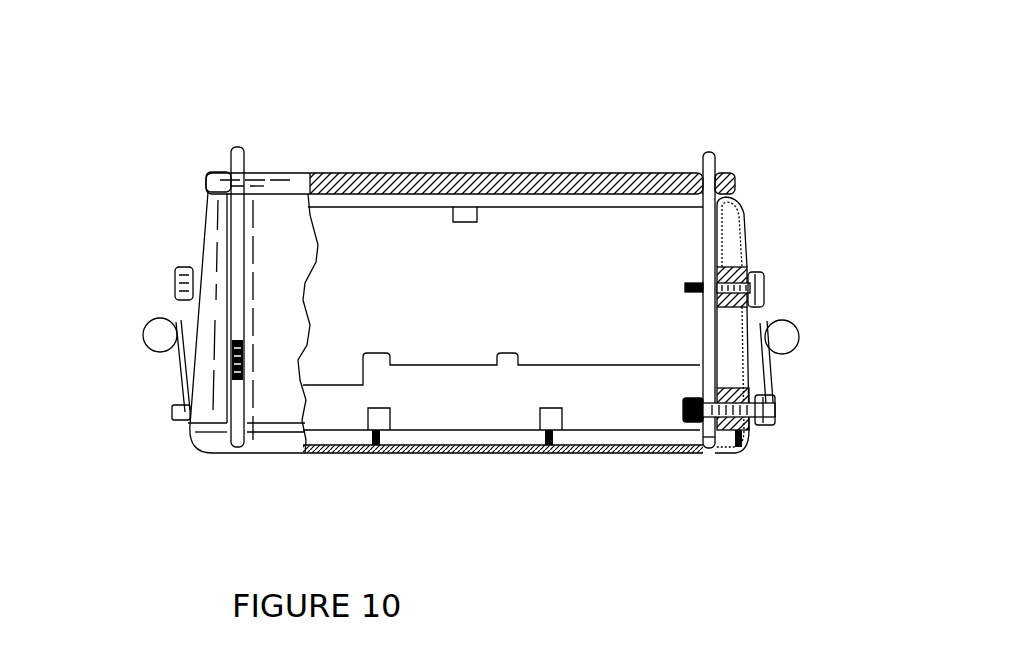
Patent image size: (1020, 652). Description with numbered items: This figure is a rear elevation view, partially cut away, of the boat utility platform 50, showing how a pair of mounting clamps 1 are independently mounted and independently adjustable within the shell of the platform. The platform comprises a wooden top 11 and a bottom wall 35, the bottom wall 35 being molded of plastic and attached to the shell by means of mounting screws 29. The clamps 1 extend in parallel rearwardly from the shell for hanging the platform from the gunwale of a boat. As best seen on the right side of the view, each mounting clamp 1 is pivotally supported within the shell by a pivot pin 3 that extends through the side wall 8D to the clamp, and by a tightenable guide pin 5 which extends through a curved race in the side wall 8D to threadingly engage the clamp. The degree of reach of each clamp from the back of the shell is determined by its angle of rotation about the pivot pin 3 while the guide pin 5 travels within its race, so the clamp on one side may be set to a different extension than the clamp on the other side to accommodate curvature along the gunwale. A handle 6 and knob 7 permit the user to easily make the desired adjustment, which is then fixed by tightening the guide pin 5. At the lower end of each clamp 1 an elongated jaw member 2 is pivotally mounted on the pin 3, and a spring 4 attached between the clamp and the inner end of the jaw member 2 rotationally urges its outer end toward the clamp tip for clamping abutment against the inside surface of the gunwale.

The boat utility platform 50 is at (410, 150).
The wooden top 11 is at (628, 172).
The mounting clamp 1 is at (237, 252).
The side wall 8D is at (742, 227).
The guide pin 5 is at (766, 283).
The knob 7 is at (788, 322).
The handle 6 is at (770, 398).
The pivot pin 3 is at (770, 412).
The jaw member 2 is at (215, 358).
The spring 4 is at (698, 437).
The bottom wall 35 is at (450, 456).
The mounting screws 29 is at (372, 453).